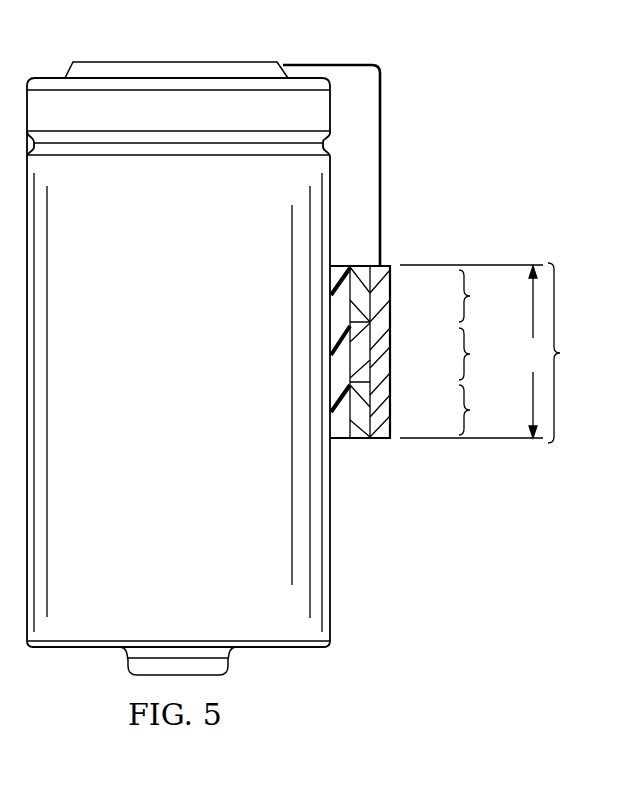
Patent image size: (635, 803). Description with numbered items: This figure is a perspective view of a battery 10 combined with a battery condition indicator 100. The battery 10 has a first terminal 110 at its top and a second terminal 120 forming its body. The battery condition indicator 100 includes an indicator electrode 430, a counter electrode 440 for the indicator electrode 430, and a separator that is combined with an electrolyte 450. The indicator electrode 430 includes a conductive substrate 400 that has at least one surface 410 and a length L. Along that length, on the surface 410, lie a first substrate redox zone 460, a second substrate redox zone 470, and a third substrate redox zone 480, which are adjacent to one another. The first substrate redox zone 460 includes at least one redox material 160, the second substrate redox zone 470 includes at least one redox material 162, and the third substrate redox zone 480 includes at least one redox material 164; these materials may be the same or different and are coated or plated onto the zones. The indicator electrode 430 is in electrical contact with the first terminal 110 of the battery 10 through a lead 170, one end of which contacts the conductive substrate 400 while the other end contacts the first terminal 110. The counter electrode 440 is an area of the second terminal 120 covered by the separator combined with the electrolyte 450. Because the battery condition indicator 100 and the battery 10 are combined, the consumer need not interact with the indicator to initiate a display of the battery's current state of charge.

The battery 10 is at (446, 60).
The battery condition indicator 100 is at (454, 233).
The first terminal 110 is at (180, 60).
The second terminal 120 is at (332, 568).
The redox material 160 is at (360, 298).
The redox material 162 is at (362, 340).
The redox material 164 is at (363, 388).
The lead 170 is at (381, 172).
The conductive substrate 400 is at (385, 268).
The surface 410 is at (360, 439).
The indicator electrode 430 is at (504, 353).
The counter electrode 440 is at (337, 303).
The separator combined with an electrolyte 450 is at (342, 432).
The first substrate redox zone 460 is at (483, 296).
The second substrate redox zone 470 is at (483, 354).
The third substrate redox zone 480 is at (483, 410).